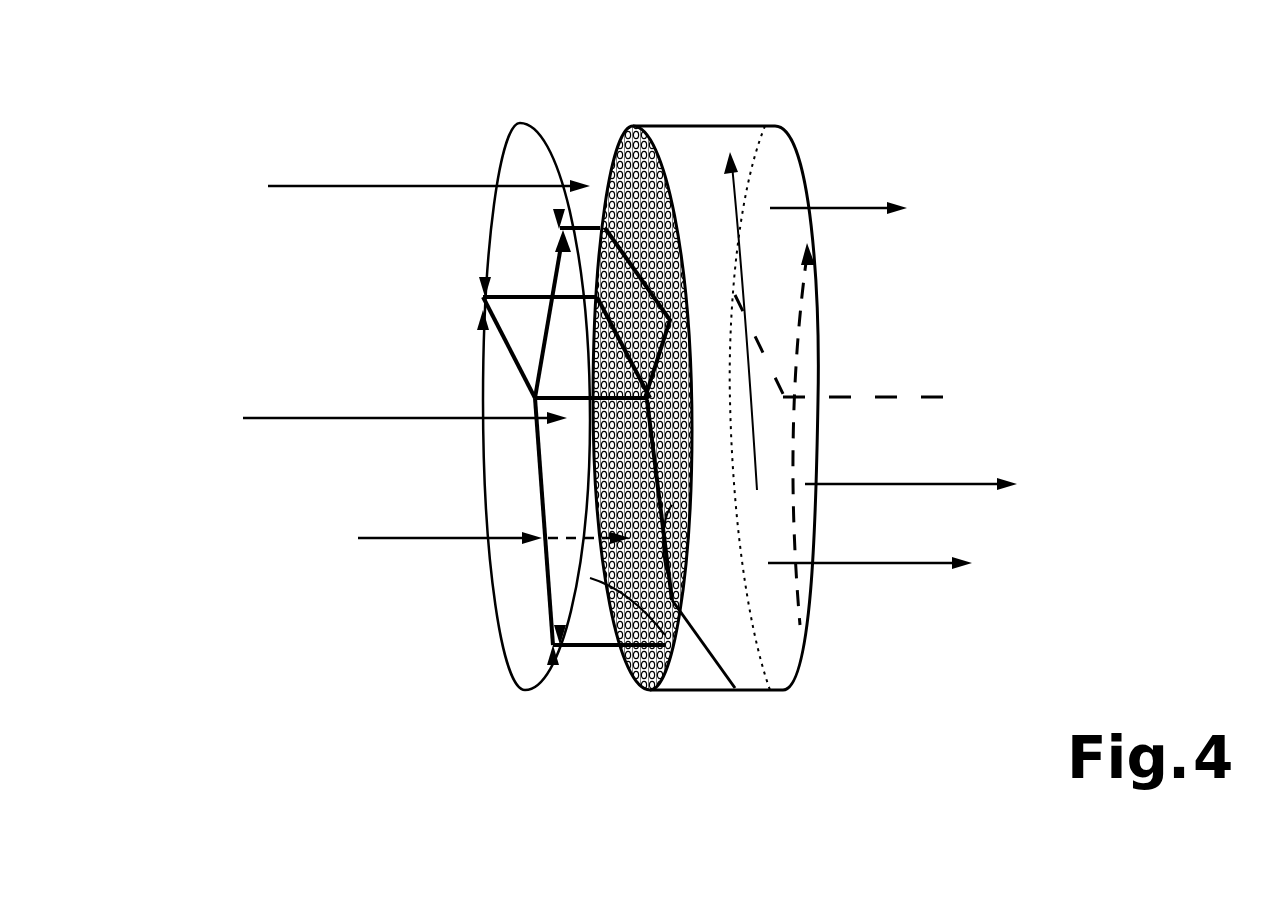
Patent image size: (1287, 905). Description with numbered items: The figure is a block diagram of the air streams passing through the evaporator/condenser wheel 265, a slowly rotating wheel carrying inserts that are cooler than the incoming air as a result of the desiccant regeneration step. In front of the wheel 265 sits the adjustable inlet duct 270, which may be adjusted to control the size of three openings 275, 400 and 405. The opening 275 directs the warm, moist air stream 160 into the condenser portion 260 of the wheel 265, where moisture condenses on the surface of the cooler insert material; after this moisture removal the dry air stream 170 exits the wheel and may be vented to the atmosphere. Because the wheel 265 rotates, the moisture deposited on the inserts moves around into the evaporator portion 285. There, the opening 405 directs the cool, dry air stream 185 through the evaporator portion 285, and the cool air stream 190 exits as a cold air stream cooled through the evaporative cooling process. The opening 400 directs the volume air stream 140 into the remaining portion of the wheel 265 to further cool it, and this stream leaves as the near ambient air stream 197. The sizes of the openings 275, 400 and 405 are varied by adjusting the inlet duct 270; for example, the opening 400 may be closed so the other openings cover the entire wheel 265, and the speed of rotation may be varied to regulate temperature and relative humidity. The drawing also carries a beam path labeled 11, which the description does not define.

The light beam 11 is at (735, 688).
The volume air stream 140 is at (357, 417).
The warm, moist air stream 160 is at (380, 185).
The dry air stream 170 is at (850, 208).
The cool, dry air stream 185 is at (382, 538).
The cool air stream 190 is at (905, 565).
The near ambient air stream 197 is at (960, 483).
The condenser portion 260 is at (630, 187).
The evaporator/condenser wheel 265 is at (752, 125).
The adjustable inlet duct 270 is at (535, 398).
The opening 275 is at (493, 160).
The evaporator portion 285 is at (625, 650).
The opening 400 is at (692, 655).
The opening 405 is at (490, 586).